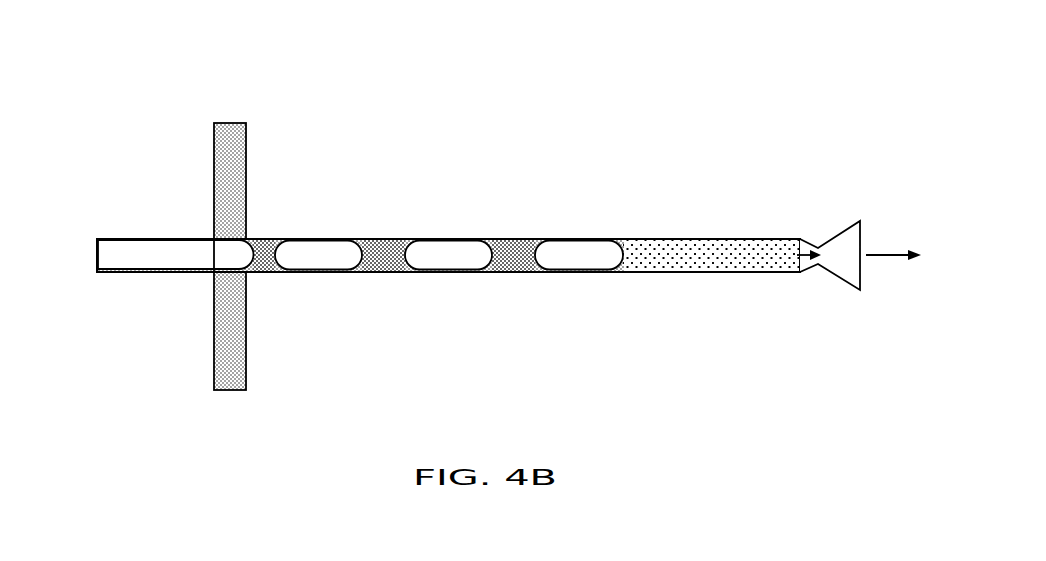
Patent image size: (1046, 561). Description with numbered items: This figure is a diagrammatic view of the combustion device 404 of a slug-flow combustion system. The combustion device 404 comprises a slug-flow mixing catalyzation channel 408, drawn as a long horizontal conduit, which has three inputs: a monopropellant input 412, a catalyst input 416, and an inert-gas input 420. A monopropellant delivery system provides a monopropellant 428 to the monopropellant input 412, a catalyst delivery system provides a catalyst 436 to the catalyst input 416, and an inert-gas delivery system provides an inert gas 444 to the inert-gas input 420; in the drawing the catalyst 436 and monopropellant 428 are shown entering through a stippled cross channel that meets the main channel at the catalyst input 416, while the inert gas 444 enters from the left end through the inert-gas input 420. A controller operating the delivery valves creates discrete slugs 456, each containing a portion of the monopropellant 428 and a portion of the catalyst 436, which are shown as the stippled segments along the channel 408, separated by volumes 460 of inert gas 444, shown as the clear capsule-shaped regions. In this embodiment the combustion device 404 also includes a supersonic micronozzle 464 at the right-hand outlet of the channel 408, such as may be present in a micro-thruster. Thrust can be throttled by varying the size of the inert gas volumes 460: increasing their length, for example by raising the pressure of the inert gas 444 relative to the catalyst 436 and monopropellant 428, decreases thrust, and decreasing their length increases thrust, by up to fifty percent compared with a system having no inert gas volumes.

The combustion device 404 is at (720, 76).
The slug-flow mixing catalyzation channel 408 is at (592, 228).
The monopropellant input 412 is at (318, 350).
The catalyst input 416 is at (260, 200).
The inert-gas input 420 is at (164, 202).
The monopropellant 428 is at (247, 365).
The catalyst 436 is at (247, 137).
The inert gas 444 is at (152, 257).
The discrete slugs 456 is at (387, 250).
The volumes of inert gas 460 is at (317, 250).
The supersonic micronozzle 464 is at (823, 226).